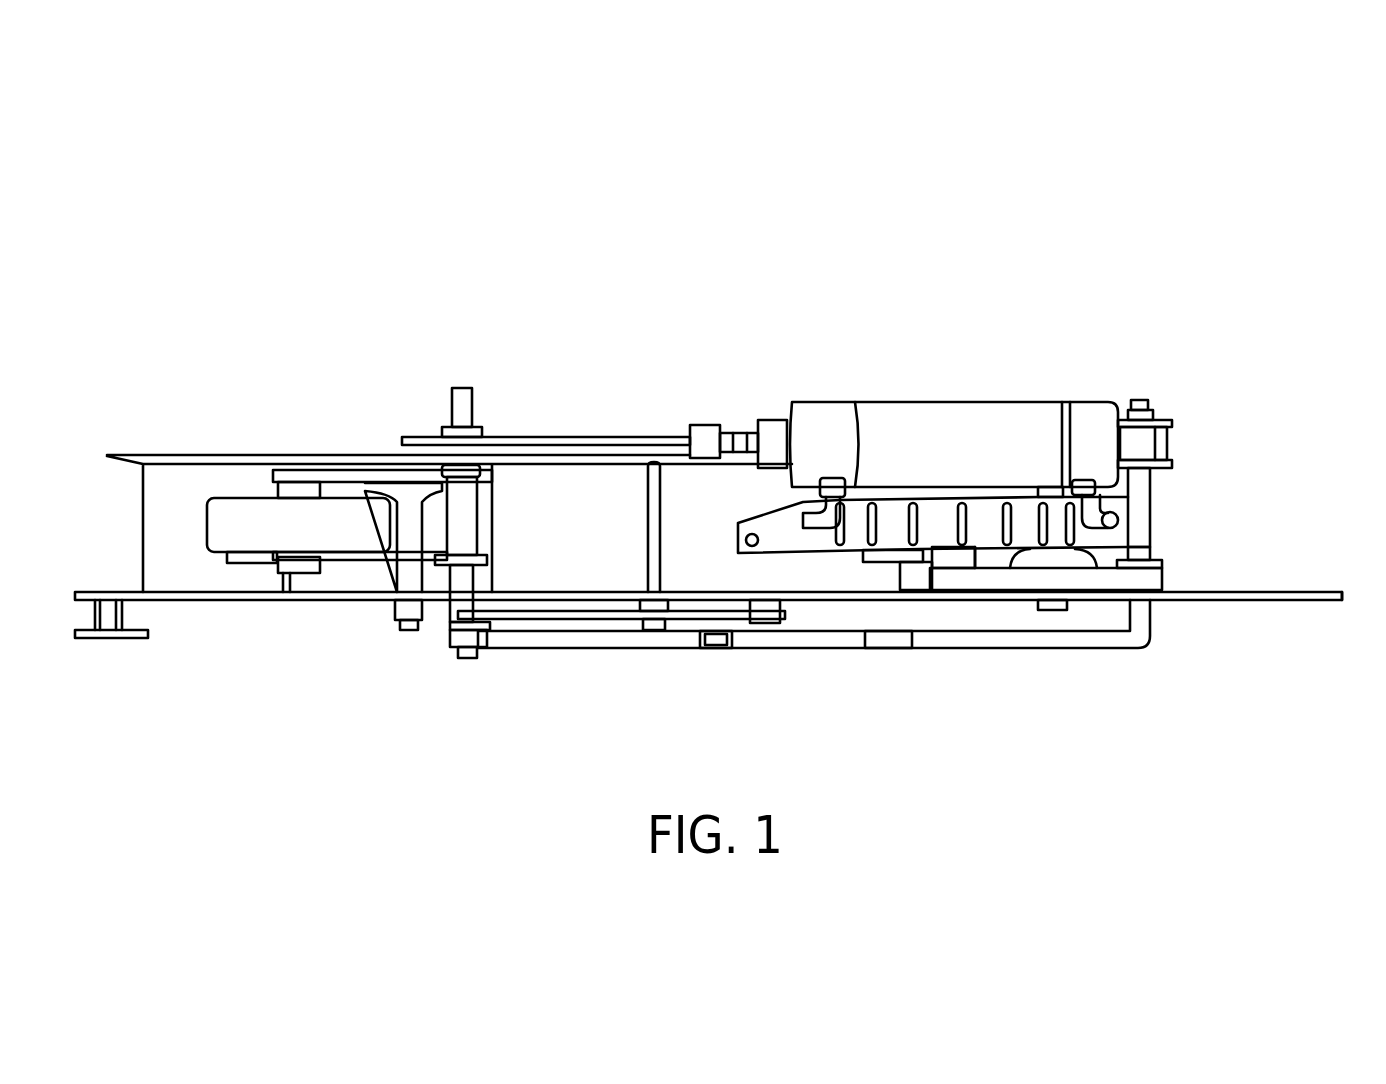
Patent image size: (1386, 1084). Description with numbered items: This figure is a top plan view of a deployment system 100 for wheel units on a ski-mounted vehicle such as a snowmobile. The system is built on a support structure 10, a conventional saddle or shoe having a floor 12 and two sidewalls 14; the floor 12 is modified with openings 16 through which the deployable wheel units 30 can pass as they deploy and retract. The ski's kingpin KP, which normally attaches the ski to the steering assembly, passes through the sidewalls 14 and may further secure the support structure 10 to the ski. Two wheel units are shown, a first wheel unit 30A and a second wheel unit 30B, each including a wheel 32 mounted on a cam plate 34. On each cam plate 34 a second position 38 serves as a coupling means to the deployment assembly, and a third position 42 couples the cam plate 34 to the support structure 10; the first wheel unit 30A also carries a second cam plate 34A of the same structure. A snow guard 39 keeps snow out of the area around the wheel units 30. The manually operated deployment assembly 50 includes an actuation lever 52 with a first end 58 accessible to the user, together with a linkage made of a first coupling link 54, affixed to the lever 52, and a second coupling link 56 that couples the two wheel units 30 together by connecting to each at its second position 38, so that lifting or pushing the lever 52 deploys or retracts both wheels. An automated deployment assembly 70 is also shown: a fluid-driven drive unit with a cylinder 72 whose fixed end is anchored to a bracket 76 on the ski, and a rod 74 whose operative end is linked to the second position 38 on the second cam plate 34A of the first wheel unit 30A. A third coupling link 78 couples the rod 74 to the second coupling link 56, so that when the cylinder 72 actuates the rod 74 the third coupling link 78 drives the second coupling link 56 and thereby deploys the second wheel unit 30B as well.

The deployment system 100 is at (838, 232).
The support structure 10 is at (177, 518).
The floor 12 is at (680, 505).
The sidewalls 14 is at (534, 462).
The openings 16 is at (238, 563).
The deployable wheel units 30 is at (744, 538).
The first wheel unit 30A is at (292, 395).
The second wheel unit 30B is at (1140, 705).
The wheel 32 is at (215, 510).
The cam plate 34 is at (348, 560).
The second cam plate 34A is at (340, 472).
The second position 38 is at (455, 468).
The snow guard 39 is at (1140, 522).
The third position 42 is at (407, 580).
The deployment assembly 50 is at (900, 665).
The actuation lever 52 is at (1247, 592).
The first coupling link 54 is at (543, 617).
The second coupling link 56 is at (588, 640).
The first end 58 is at (1340, 602).
The automated deployment assembly 70 is at (928, 343).
The cylinder 72 is at (1020, 437).
The rod 74 is at (578, 437).
The bracket 76 is at (1138, 405).
The third coupling link 78 is at (465, 508).
The kingpin KP is at (653, 578).